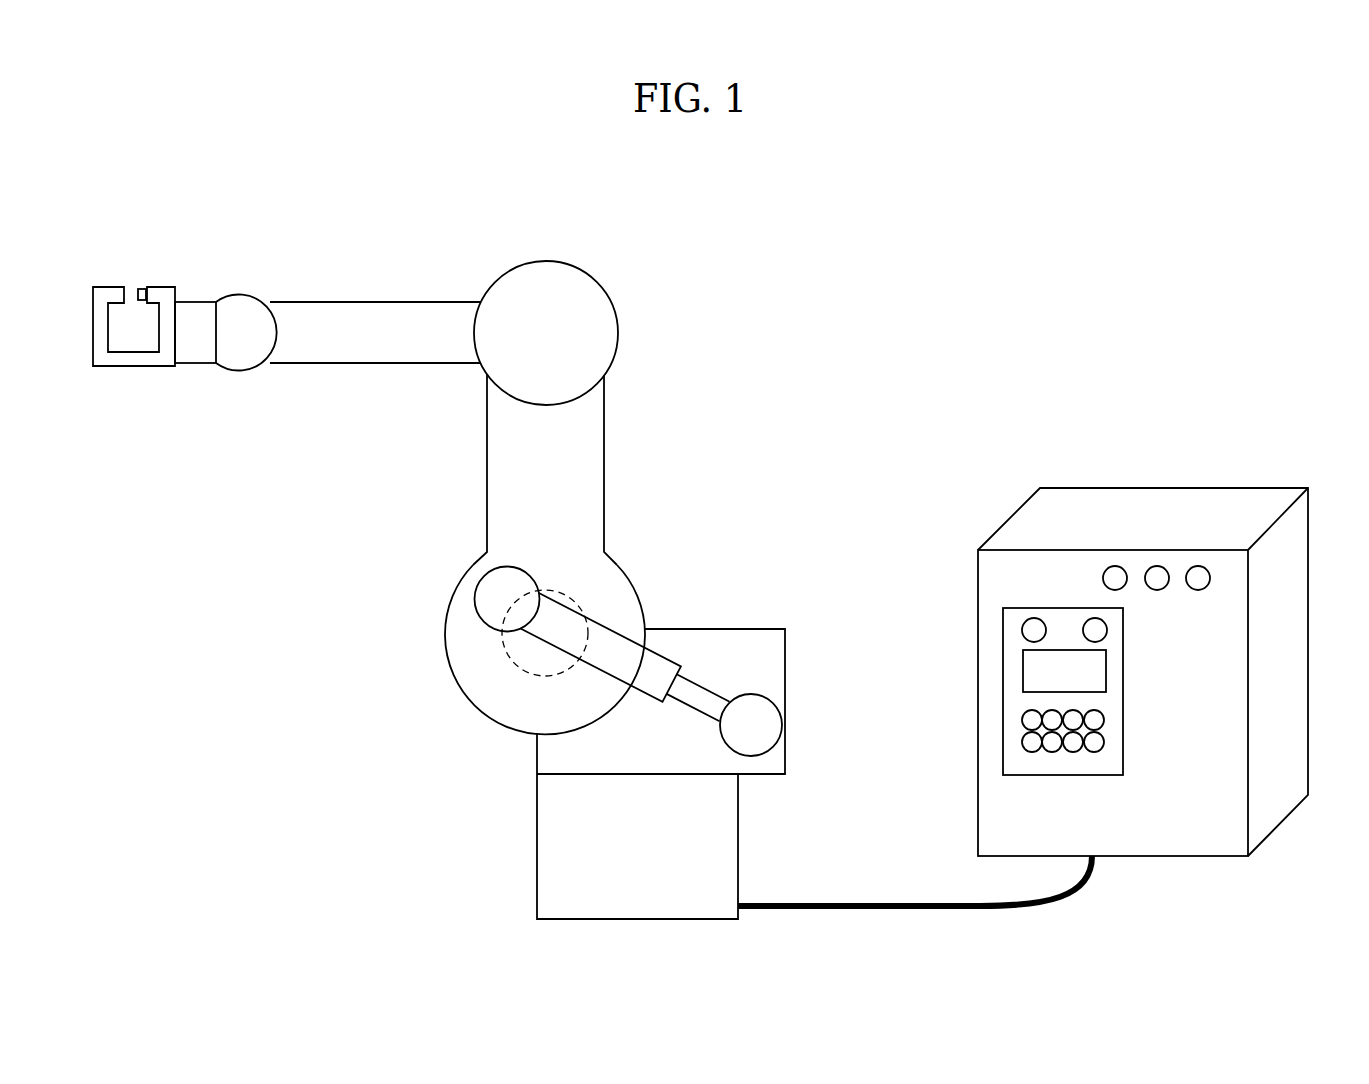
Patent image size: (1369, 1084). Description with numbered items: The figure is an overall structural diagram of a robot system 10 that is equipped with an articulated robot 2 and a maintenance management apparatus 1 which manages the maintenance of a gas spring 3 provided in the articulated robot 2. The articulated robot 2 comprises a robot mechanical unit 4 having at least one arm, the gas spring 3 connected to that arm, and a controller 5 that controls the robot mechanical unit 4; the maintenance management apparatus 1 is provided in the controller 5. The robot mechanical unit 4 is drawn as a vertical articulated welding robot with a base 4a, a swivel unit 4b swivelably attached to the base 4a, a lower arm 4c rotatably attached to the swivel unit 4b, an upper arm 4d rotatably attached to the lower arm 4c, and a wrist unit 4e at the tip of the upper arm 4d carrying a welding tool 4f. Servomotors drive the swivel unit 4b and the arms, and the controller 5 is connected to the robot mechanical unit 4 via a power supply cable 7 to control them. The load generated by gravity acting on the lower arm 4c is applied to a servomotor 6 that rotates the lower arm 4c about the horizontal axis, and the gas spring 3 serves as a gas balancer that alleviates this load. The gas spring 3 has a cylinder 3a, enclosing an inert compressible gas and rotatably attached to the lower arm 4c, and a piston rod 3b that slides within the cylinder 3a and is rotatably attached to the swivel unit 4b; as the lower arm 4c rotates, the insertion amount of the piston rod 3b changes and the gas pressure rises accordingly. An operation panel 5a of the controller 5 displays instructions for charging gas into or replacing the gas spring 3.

The robot system 10 is at (1205, 175).
The articulated robot 2 is at (996, 340).
The robot mechanical unit 4 is at (693, 348).
The base 4a is at (548, 857).
The swivel unit 4b is at (750, 643).
The lower arm 4c is at (505, 462).
The upper arm 4d is at (358, 330).
The wrist unit 4e is at (195, 301).
The welding tool 4f is at (127, 368).
The gas spring 3 is at (524, 675).
The cylinder 3a is at (598, 618).
The piston rod 3b is at (700, 692).
The servomotor 6 is at (502, 642).
The power supply cable 7 is at (866, 902).
The controller 5 is at (1165, 437).
The maintenance management apparatus 1 is at (1111, 603).
The operation panel 5a is at (1038, 606).